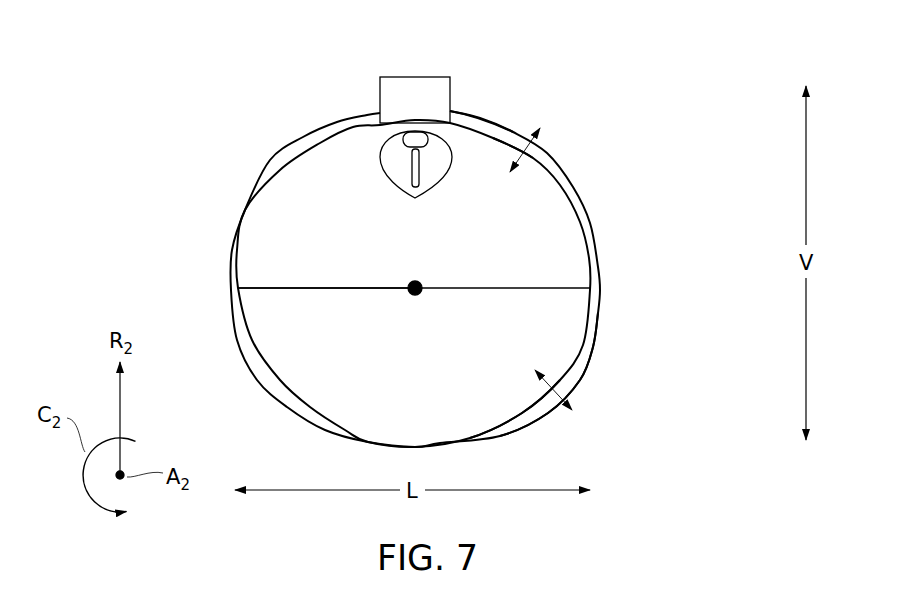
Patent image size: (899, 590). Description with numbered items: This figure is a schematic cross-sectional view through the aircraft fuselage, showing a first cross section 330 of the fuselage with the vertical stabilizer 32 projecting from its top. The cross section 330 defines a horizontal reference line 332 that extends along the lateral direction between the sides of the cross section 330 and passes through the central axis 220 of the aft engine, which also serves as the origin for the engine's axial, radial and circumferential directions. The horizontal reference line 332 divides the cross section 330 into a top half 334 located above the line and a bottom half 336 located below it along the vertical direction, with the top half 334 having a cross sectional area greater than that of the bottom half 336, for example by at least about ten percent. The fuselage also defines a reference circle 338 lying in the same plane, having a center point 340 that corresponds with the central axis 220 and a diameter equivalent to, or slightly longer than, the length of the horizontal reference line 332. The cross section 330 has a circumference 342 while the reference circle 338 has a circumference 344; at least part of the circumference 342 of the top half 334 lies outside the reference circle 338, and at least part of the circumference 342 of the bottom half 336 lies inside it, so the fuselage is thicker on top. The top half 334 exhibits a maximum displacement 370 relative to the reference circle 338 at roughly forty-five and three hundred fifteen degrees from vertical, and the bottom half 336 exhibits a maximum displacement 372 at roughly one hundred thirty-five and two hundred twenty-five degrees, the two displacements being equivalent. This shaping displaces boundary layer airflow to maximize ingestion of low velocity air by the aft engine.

The vertical stabilizer 32 is at (432, 93).
The longitudinal centerline axis 220 is at (420, 297).
The first cross section 330 is at (653, 163).
The horizontal reference line 332 is at (527, 283).
The top half 334 is at (490, 172).
The bottom half 336 is at (515, 379).
The reference circle 338 is at (583, 375).
The center point 340 is at (407, 293).
The circumference of cross section 342 is at (479, 106).
The circumference of reference circle 344 is at (599, 349).
The maximum displacement of top half 370 is at (527, 148).
The maximum displacement of bottom half 372 is at (560, 395).